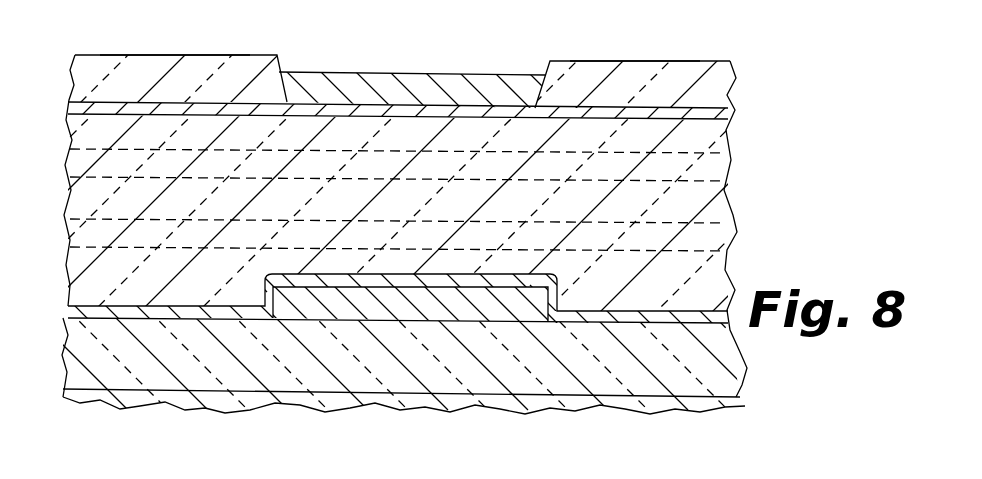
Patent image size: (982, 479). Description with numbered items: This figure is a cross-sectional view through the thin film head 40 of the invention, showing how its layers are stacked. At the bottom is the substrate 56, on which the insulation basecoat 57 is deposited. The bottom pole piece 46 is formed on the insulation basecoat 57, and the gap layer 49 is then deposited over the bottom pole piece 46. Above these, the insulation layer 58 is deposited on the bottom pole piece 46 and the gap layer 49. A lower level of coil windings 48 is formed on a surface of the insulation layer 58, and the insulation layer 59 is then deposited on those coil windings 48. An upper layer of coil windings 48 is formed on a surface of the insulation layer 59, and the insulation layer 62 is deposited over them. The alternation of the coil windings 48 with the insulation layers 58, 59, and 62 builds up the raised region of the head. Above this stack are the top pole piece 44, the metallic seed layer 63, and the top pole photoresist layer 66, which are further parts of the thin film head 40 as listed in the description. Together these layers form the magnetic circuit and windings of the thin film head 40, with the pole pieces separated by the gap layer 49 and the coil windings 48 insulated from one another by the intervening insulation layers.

The thin film head 40 is at (230, 416).
The top pole piece 44 is at (343, 83).
The bottom pole piece 46 is at (403, 300).
The coil windings 48 is at (88, 162).
The gap layer 49 is at (327, 283).
The substrate 56 is at (587, 407).
The insulation basecoat 57 is at (188, 365).
The insulation layer 58 is at (90, 285).
The insulation layer 59 is at (440, 203).
The insulation layer 62 is at (528, 128).
The metallic seed layer 63 is at (203, 107).
The top pole photoresist layer 66 is at (135, 78).